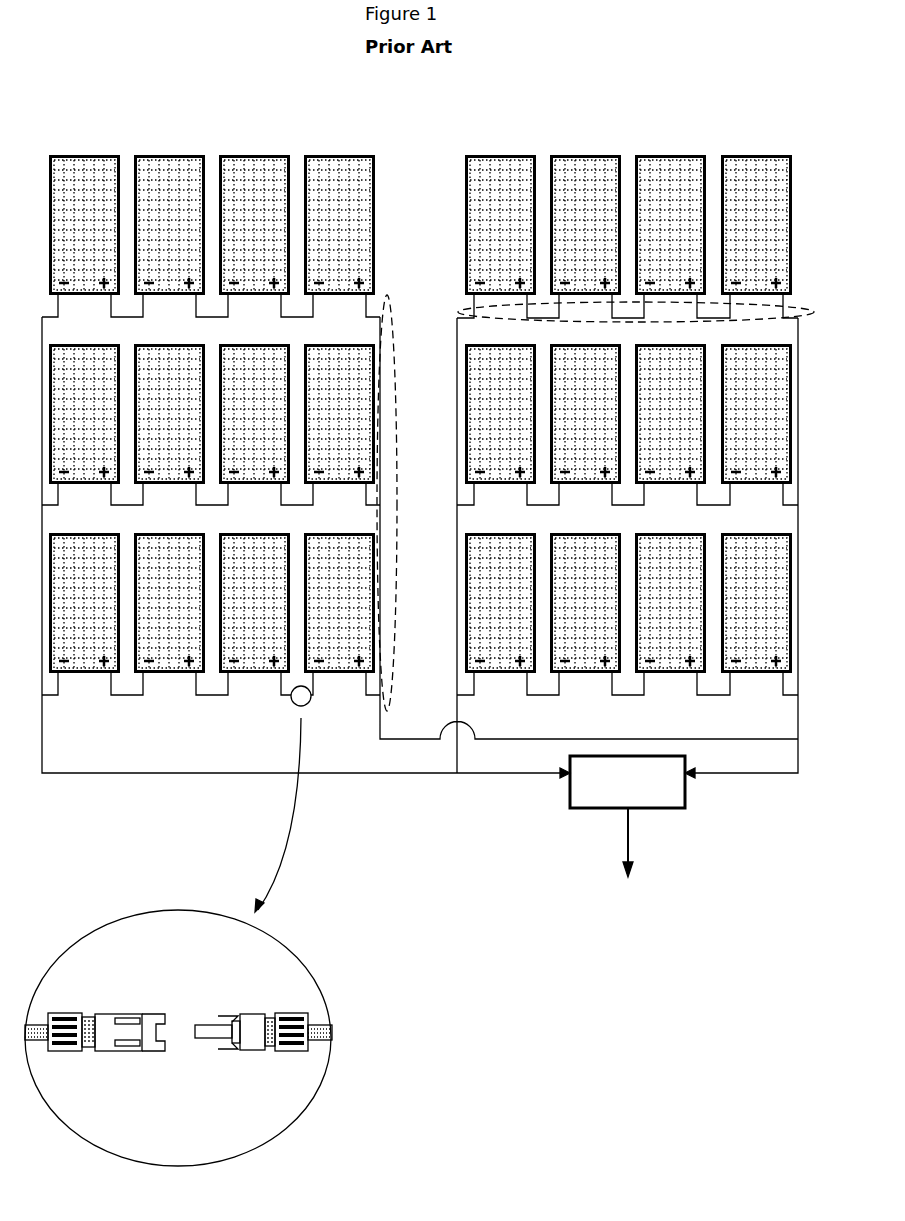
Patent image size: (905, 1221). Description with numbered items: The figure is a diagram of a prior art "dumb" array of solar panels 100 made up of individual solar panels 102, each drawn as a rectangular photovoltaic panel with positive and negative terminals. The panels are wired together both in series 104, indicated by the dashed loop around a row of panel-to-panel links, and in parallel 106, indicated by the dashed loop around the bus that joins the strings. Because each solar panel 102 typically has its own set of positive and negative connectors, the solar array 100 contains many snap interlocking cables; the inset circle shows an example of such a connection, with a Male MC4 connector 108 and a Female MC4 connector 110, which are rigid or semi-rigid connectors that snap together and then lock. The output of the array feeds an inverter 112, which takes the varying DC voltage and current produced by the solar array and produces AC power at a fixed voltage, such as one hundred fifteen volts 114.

The array of solar panels 100 is at (234, 70).
The solar panel 102 is at (99, 140).
The series wiring 104 is at (650, 307).
The parallel wiring 106 is at (405, 317).
The Male MC4 connector 108 is at (270, 1060).
The Female MC4 connector 110 is at (147, 1062).
The inverter 112 is at (572, 825).
The AC power output at fixed voltage 114 is at (645, 858).